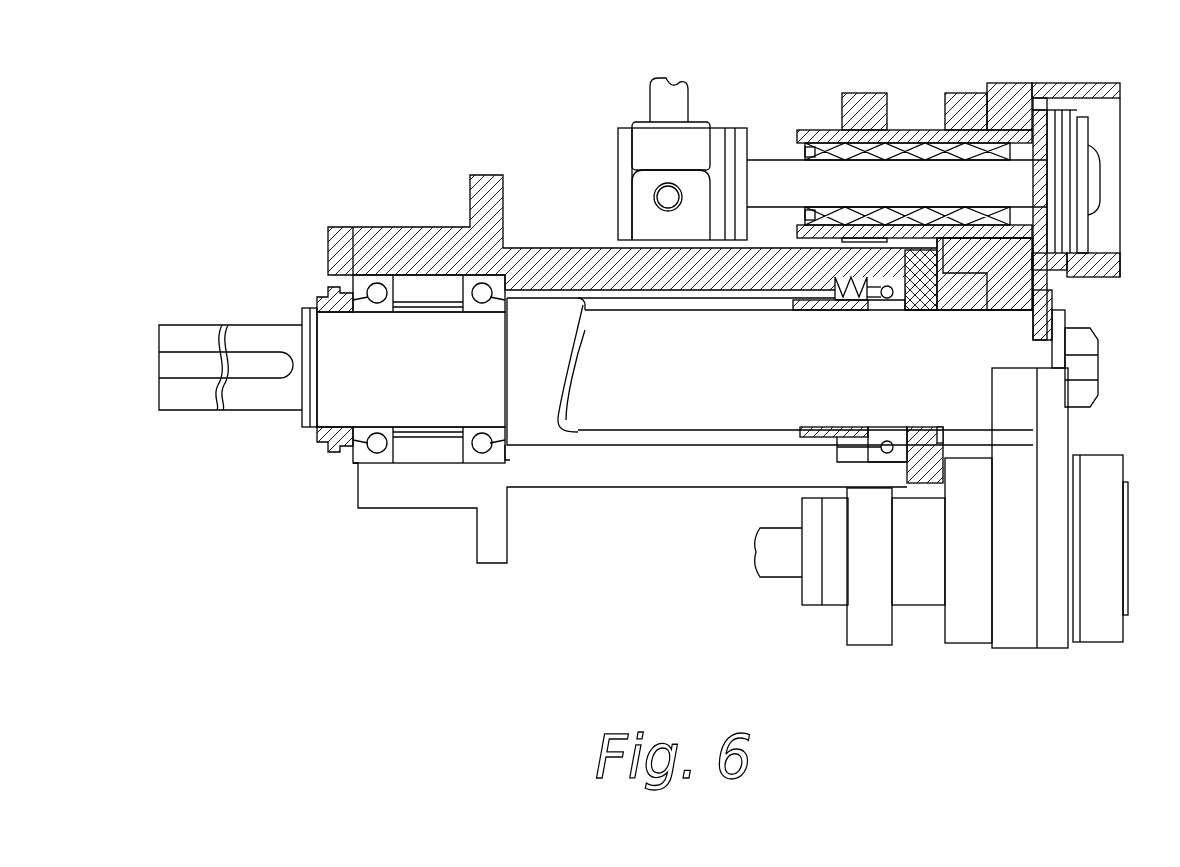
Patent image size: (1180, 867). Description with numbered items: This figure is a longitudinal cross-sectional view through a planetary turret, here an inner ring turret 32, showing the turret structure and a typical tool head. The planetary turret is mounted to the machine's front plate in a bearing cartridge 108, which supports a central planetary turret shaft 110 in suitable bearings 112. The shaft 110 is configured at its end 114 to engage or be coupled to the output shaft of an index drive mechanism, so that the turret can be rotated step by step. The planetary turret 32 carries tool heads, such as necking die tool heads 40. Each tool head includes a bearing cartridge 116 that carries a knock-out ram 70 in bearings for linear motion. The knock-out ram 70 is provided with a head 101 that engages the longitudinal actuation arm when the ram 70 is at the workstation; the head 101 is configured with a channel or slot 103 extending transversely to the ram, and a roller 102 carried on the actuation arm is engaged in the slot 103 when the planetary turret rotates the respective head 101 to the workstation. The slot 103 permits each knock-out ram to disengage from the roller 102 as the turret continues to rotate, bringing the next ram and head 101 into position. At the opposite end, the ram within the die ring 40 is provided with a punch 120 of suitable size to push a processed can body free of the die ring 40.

The end of shaft 114 is at (170, 330).
The bearing cartridge 108 is at (403, 235).
The bearings 112 is at (385, 463).
The planetary turret shaft 110 is at (750, 383).
The head 101 is at (627, 198).
The slot 103 is at (635, 167).
The roller 102 is at (680, 137).
The knock-out ram 70 is at (793, 187).
The bearing cartridge 116 is at (945, 112).
The inner ring turret 32 is at (1002, 98).
The necking die tool head 40 is at (1100, 97).
The punch 120 is at (1082, 125).